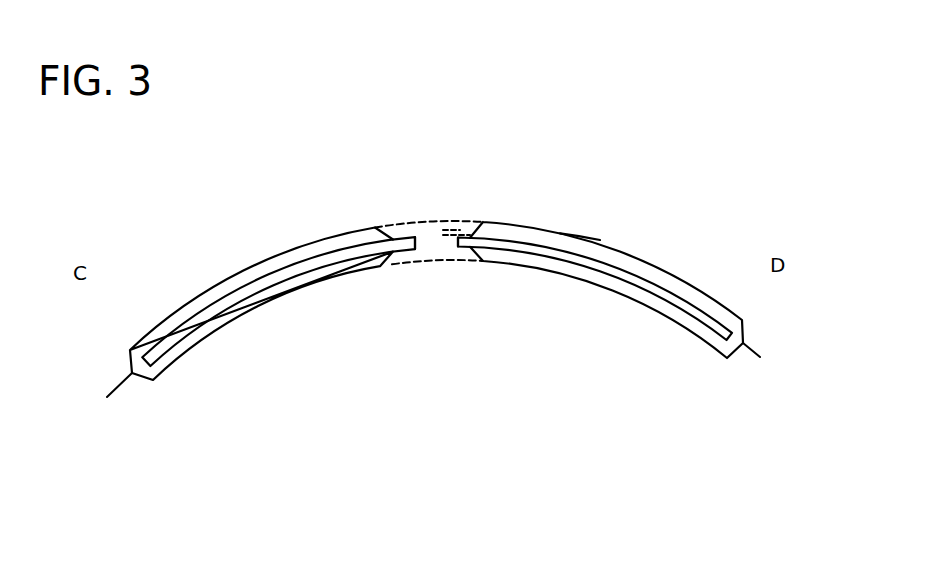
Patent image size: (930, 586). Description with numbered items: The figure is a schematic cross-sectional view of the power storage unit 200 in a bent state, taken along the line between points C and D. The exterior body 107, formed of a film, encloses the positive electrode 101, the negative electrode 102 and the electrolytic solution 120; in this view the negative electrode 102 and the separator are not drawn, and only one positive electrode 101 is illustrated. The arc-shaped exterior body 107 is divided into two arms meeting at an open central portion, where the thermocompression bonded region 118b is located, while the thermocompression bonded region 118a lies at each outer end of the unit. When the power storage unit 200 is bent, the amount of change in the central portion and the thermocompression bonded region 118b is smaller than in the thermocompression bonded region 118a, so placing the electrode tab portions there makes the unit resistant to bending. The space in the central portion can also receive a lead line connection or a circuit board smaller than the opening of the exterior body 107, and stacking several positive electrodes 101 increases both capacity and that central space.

The power storage unit 200 is at (289, 217).
The exterior body 107 is at (620, 245).
The electrolytic solution 120 is at (510, 230).
The positive electrode 101 is at (400, 245).
The negative electrode 102 is at (447, 230).
The thermocompression bonded region 118b is at (467, 246).
The thermocompression bonded region 118a is at (123, 387).